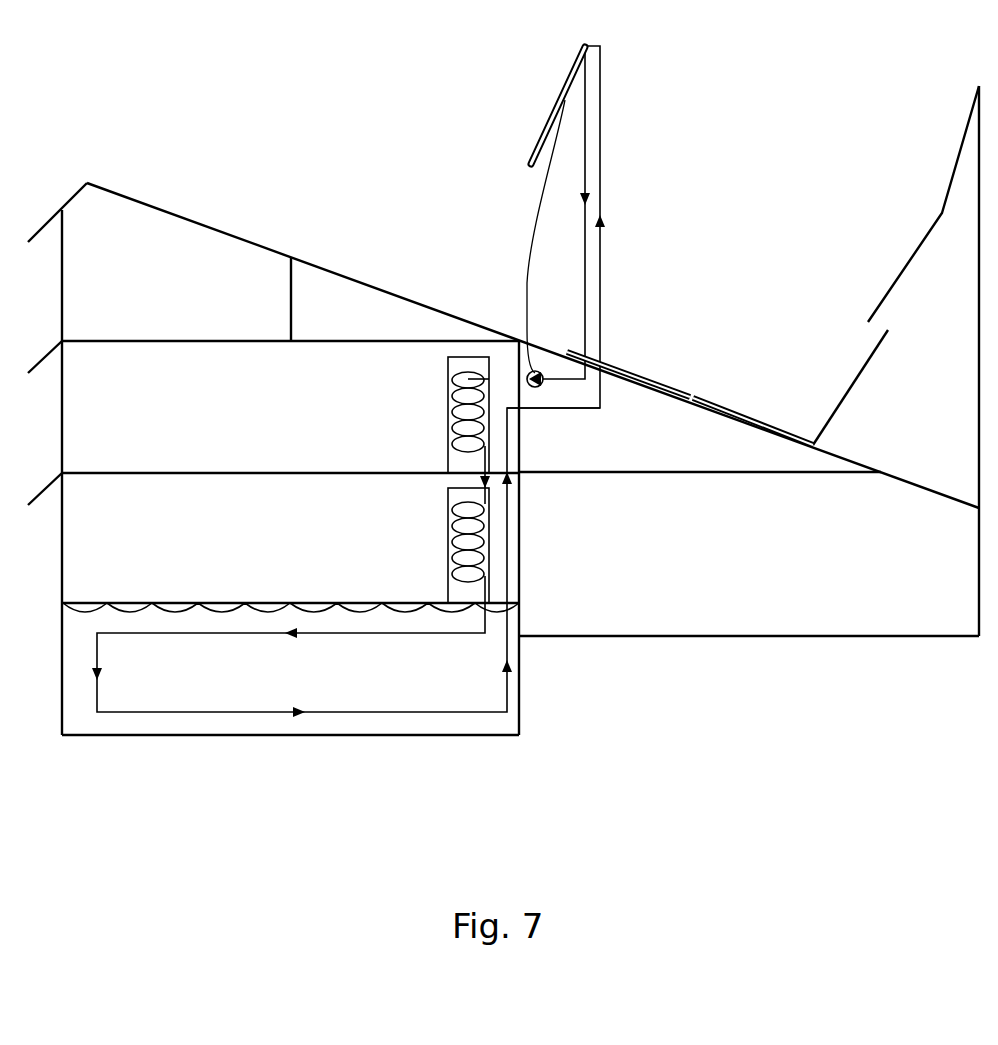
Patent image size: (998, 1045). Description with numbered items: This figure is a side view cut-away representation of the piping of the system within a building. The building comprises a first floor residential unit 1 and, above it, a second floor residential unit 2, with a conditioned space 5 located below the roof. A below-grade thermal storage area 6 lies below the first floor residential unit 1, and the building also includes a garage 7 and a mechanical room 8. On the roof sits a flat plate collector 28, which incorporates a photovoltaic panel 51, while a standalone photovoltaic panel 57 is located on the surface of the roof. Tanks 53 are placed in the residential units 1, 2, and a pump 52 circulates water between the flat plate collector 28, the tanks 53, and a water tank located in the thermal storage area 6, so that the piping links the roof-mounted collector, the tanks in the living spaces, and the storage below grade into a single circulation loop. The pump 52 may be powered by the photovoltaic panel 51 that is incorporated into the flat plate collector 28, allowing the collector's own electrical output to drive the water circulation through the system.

The first floor residential unit 1 is at (163, 503).
The second floor residential unit 2 is at (163, 373).
The conditioned space 5 is at (108, 258).
The below-grade thermal storage area 6 is at (162, 640).
The garage 7 is at (608, 525).
The mechanical room 8 is at (553, 410).
The flat plate collector 28 is at (577, 68).
The photovoltaic panel 51 is at (573, 88).
The pump 52 is at (545, 378).
The tanks 53 is at (468, 357).
The standalone photovoltaic panel 57 is at (690, 398).